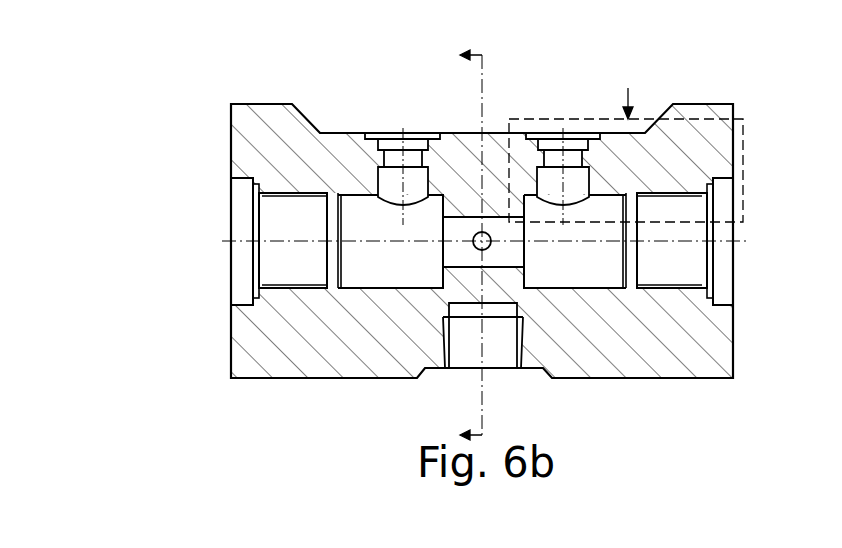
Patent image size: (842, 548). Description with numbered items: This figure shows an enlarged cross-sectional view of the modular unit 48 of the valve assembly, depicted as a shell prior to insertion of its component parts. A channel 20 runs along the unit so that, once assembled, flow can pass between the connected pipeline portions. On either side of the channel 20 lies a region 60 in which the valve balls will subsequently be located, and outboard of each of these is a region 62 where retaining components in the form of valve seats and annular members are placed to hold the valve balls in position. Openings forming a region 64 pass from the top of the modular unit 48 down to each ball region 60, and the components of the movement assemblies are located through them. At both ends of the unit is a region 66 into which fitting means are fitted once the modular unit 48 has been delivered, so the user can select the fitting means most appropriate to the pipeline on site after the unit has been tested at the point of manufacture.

The channel 20 is at (462, 248).
The modular unit 48 is at (322, 335).
The region 60 is at (382, 263).
The region 62 is at (278, 222).
The region 64 is at (414, 182).
The region 66 is at (243, 201).